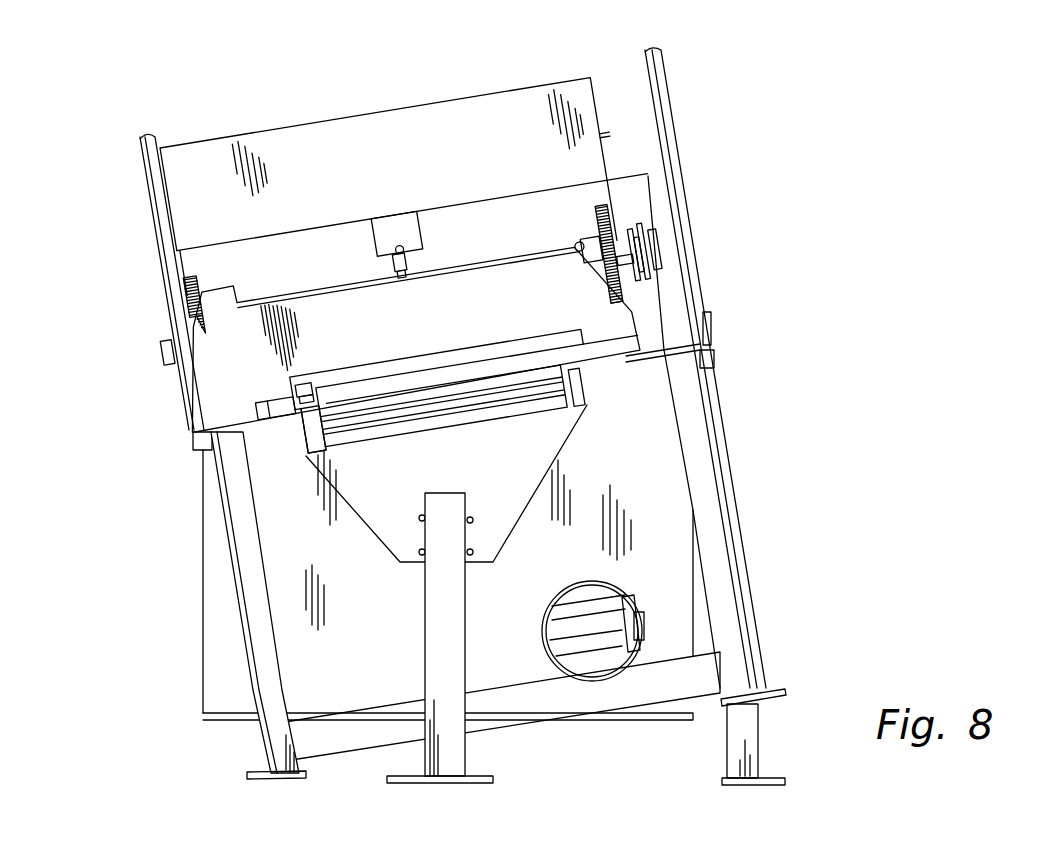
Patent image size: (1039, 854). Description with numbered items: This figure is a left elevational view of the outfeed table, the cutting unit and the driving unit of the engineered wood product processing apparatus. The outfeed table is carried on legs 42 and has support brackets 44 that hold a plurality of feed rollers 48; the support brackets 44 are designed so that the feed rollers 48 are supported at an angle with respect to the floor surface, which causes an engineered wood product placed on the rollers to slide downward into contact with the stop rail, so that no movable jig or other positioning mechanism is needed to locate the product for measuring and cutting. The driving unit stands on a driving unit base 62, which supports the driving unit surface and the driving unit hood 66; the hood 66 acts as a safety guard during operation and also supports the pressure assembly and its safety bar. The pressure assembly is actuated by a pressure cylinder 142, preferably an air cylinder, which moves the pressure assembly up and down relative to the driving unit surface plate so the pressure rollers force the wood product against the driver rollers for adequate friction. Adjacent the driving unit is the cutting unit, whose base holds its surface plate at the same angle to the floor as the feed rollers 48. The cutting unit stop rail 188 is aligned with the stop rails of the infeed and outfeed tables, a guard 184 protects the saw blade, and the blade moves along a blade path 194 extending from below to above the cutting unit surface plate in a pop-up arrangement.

The legs 42 is at (460, 752).
The support brackets 44 is at (512, 498).
The feed rollers 48 is at (560, 392).
The driving unit base 62 is at (664, 523).
The driving unit hood 66 is at (380, 132).
The pressure cylinder 142 is at (398, 222).
The guard 184 is at (677, 135).
The cutting unit stop rail 188 is at (526, 310).
The blade path 194 is at (355, 393).